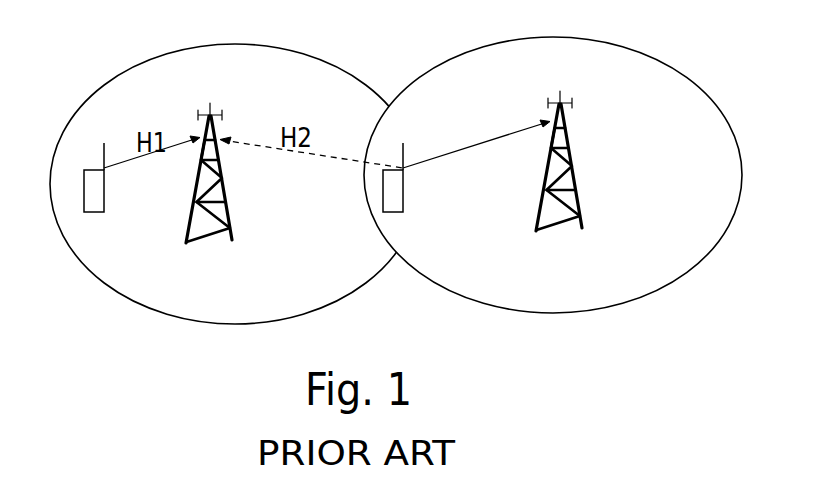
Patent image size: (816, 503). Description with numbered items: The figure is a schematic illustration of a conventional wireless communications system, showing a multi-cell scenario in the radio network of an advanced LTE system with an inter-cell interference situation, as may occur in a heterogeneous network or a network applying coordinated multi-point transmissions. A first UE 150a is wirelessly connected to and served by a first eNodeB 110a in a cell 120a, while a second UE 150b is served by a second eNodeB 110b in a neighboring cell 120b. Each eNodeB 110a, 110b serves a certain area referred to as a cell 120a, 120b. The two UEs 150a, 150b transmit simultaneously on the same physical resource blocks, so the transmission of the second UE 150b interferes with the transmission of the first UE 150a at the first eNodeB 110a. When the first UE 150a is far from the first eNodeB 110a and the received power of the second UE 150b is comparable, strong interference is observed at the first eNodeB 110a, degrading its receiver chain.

The cell 120a is at (308, 86).
The neighboring cell 120b is at (678, 92).
The first eNodeB 110a is at (230, 242).
The second eNodeB 110b is at (581, 214).
The first UE 150a is at (103, 212).
The second UE 150b is at (402, 200).